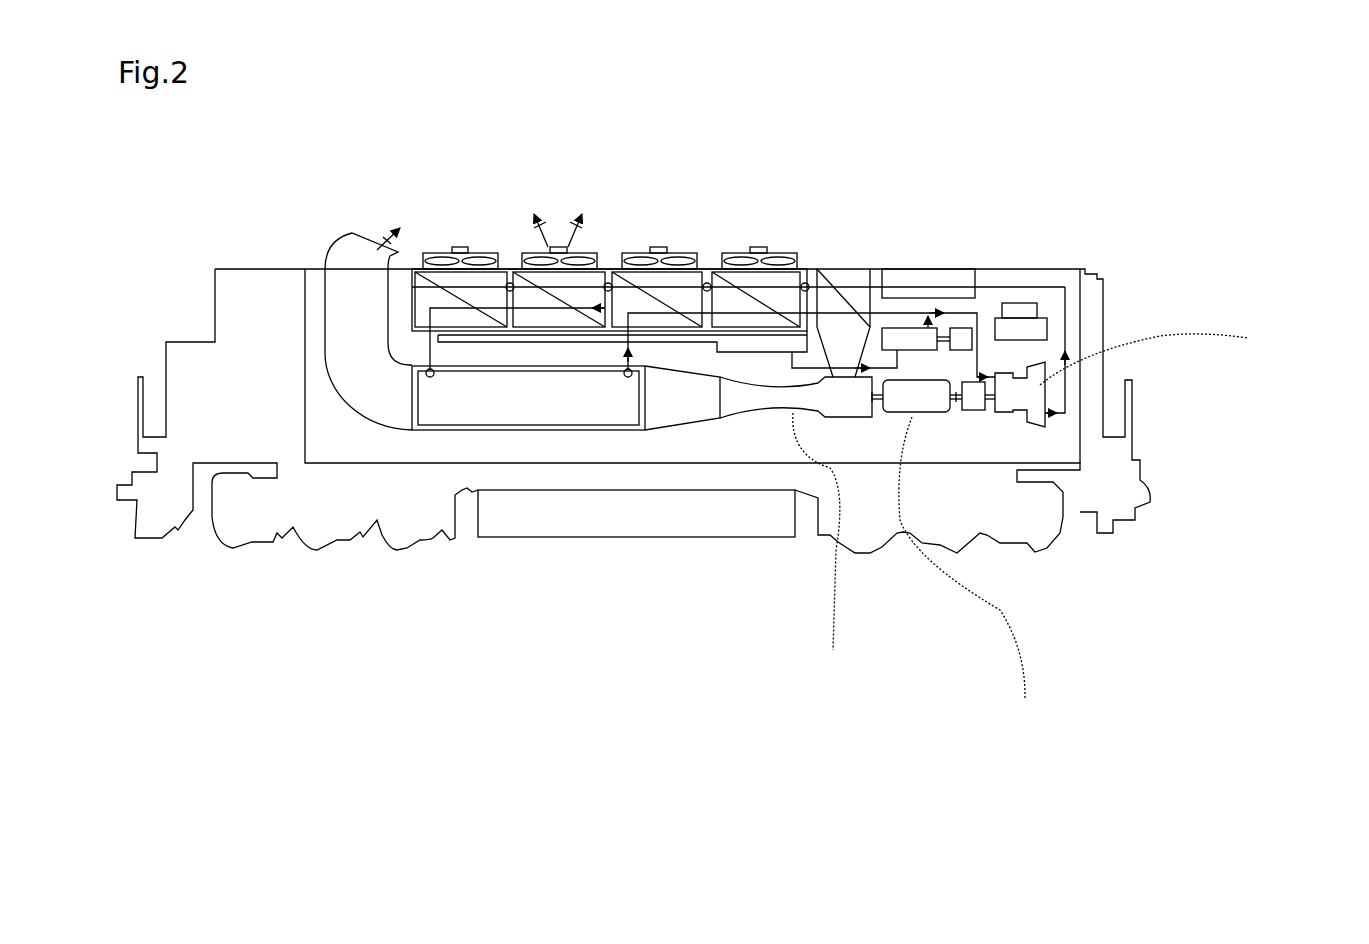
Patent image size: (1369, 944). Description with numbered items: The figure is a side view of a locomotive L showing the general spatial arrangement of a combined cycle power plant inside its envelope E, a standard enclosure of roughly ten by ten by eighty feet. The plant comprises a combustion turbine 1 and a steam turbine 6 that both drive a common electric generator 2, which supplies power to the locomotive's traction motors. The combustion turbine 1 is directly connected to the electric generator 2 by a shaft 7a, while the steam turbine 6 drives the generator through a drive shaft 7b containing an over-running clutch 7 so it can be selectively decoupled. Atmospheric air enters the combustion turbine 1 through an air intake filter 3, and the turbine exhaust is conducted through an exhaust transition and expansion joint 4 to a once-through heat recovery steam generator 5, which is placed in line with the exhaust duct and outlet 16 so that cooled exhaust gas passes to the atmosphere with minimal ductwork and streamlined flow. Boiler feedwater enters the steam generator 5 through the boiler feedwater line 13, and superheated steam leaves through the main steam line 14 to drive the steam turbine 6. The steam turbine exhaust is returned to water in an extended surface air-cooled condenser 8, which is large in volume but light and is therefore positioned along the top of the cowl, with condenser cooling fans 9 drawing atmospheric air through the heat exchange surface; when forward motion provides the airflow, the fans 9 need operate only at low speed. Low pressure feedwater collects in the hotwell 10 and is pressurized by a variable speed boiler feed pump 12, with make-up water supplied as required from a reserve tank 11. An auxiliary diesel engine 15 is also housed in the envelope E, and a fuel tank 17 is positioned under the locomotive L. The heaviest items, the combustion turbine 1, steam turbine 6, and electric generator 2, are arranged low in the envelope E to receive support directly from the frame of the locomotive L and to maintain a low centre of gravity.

The combustion turbine 1 is at (798, 405).
The electric generator 2 is at (924, 407).
The air intake filter 3 is at (850, 275).
The exhaust transition and expansion joint 4 is at (686, 405).
The heat recovery steam generator 5 is at (534, 405).
The steam turbine 6 is at (1032, 405).
The over-running clutch 7 is at (981, 407).
The shaft 7a is at (877, 402).
The drive shaft 7b is at (953, 402).
The condenser 8 is at (601, 270).
The condenser cooling fans 9 is at (678, 255).
The hotwell 10 is at (771, 377).
The reserve tank 11 is at (922, 274).
The variable speed boiler feed pump 12 is at (932, 350).
The boiler feedwater line 13 is at (463, 360).
The main steam line 14 is at (609, 361).
The auxiliary diesel engine 15 is at (1040, 327).
The exhaust duct and outlet 16 is at (347, 255).
The fuel tank 17 is at (650, 523).
The envelope E is at (262, 258).
The locomotive L is at (1029, 229).